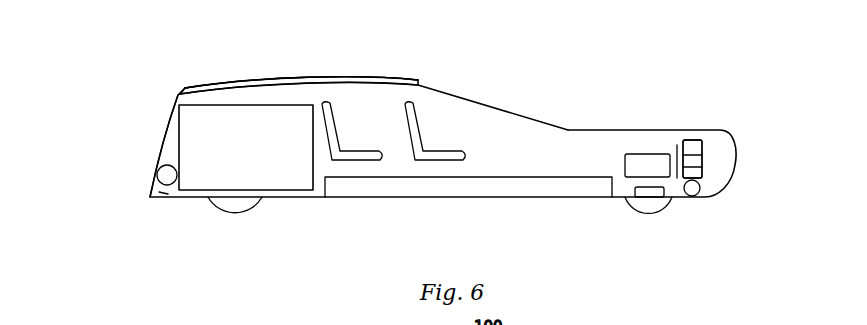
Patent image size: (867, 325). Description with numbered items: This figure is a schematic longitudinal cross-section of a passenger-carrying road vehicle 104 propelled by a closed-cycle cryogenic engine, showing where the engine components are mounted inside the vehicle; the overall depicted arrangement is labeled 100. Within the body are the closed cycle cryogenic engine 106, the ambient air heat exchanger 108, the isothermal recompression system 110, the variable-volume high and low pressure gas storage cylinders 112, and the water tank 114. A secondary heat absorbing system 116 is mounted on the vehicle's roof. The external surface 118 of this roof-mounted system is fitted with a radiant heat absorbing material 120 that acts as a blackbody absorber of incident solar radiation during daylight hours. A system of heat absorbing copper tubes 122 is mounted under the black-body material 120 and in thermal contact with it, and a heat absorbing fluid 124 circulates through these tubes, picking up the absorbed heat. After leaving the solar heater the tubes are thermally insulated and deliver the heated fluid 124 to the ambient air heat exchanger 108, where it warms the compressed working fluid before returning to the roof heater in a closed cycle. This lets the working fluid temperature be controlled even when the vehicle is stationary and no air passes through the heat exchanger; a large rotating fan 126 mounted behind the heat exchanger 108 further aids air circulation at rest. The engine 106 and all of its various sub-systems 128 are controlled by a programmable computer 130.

The vehicle 100 is at (443, 98).
The passenger-carrying road vehicle 104 is at (522, 107).
The closed cycle cryogenic engine 106 is at (657, 154).
The ambient air heat exchanger 108 is at (702, 157).
The isothermal recompression system 110 is at (153, 178).
The variable-volume high and low pressure gas storage cylinders 112 is at (293, 192).
The water tank 114 is at (443, 198).
The secondary heat absorbing system 116 is at (256, 82).
The external surface 118 is at (202, 87).
The radiant heat absorbing material 120 is at (185, 94).
The heat absorbing copper tubes 122 is at (417, 81).
The heat absorbing fluid 124 is at (265, 80).
The rotating fan 126 is at (681, 131).
The sub-systems 128 is at (664, 193).
The programmable computer 130 is at (700, 190).